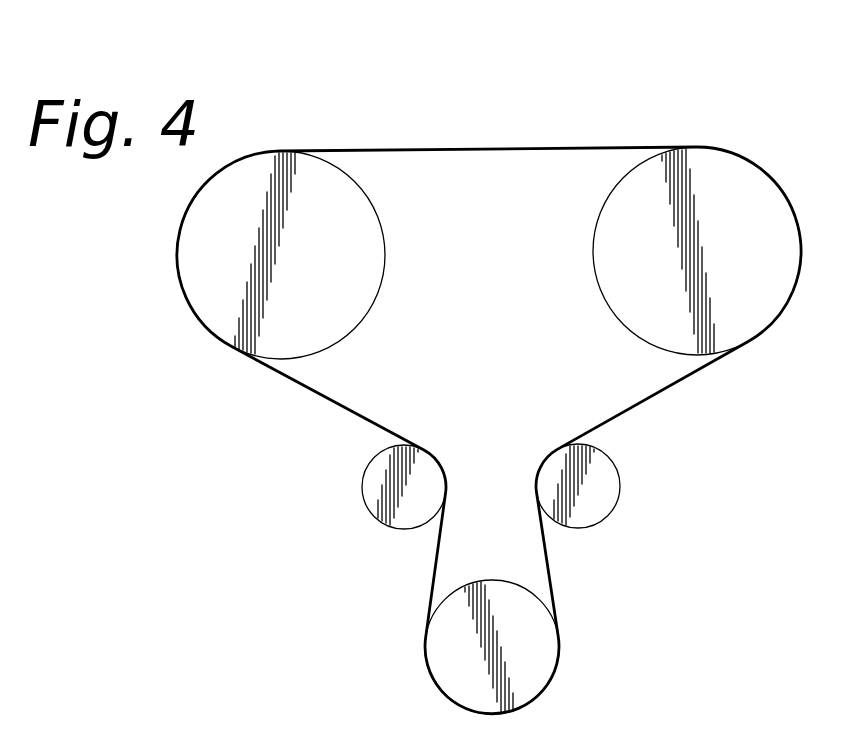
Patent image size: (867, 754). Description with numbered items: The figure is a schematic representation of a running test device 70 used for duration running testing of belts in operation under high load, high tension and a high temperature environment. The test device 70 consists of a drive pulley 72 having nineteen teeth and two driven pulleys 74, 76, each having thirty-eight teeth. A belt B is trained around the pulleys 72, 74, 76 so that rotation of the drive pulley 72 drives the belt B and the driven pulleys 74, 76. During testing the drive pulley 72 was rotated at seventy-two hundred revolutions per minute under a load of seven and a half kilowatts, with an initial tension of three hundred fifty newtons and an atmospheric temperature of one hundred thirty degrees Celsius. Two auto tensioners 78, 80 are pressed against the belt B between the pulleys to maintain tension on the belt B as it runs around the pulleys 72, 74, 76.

The running test device 70 is at (713, 63).
The drive pulley 72 is at (533, 672).
The driven pulley 74 is at (730, 177).
The driven pulley 76 is at (265, 175).
The auto tensioner 78 is at (393, 527).
The auto tensioner 80 is at (618, 474).
The belt B is at (462, 152).